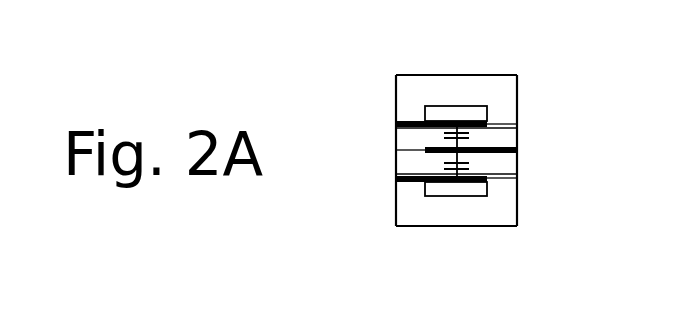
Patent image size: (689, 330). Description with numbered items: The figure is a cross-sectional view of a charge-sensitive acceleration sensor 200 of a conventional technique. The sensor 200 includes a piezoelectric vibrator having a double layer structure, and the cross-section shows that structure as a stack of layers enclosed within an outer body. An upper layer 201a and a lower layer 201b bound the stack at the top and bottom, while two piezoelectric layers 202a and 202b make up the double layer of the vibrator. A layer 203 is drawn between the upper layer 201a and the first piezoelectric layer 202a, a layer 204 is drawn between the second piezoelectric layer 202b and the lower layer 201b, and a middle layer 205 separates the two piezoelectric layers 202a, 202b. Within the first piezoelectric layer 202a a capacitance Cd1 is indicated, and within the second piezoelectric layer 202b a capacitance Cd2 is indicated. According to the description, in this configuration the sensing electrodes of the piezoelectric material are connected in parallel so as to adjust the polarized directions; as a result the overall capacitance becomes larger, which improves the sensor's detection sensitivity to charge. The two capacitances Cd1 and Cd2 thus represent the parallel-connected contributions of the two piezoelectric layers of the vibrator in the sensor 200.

The acceleration sensor 200 is at (400, 58).
The upper electrode 201a is at (450, 75).
The lower electrode 201b is at (454, 226).
The upper semiconductor layer 202a is at (517, 122).
The lower semiconductor layer 202b is at (517, 176).
The upper conductive layer 203 is at (396, 123).
The lower conductive layer 204 is at (396, 177).
The intermediate electrode layer 205 is at (517, 148).
The first capacitance Cd1 is at (476, 135).
The second capacitance Cd2 is at (476, 165).